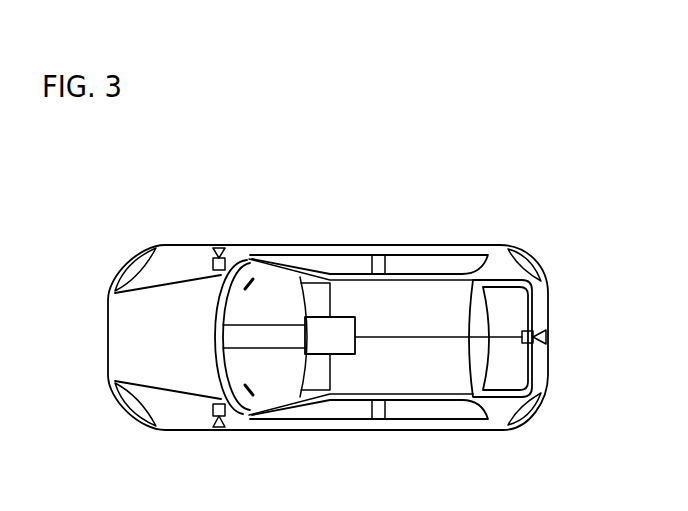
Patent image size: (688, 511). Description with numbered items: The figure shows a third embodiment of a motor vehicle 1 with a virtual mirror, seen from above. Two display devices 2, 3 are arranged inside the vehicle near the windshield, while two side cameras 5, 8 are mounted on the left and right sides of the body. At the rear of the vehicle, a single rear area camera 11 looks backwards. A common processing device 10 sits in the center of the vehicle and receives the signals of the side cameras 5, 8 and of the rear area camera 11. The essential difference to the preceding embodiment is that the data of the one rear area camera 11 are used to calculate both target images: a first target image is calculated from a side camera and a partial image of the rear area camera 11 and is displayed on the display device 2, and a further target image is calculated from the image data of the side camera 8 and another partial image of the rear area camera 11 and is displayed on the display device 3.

The motor vehicle 1 is at (489, 214).
The display device 2 is at (247, 391).
The display device 3 is at (249, 282).
The side camera 5 is at (212, 408).
The side camera 8 is at (212, 260).
The processing device 10 is at (347, 355).
The rear area camera 11 is at (531, 345).